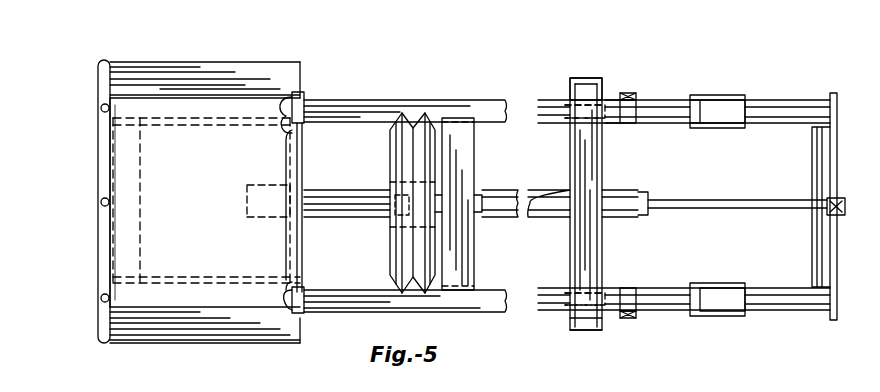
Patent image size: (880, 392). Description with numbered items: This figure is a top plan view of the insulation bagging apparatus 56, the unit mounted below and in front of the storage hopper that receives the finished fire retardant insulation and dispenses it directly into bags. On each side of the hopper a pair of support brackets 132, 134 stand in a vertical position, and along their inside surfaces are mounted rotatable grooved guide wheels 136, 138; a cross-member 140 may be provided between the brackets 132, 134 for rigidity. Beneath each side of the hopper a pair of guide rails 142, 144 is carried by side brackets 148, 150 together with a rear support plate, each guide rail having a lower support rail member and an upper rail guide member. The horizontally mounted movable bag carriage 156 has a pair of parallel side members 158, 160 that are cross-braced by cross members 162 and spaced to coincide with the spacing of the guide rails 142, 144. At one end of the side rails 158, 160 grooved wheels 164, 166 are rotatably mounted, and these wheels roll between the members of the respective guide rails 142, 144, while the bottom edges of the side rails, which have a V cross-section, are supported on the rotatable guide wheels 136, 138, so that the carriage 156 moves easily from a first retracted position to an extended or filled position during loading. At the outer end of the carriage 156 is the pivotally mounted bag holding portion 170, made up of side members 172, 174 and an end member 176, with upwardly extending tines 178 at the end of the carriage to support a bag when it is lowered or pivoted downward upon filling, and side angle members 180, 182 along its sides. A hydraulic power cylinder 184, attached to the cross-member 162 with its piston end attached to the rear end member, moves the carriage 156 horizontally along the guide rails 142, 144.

The insulation bagging apparatus 56 is at (259, 359).
The support bracket 132 is at (578, 330).
The support bracket 134 is at (585, 82).
The guide wheel 136 is at (606, 312).
The guide wheel 138 is at (598, 110).
The cross-member 140 is at (590, 157).
The guide rail 142 is at (795, 312).
The guide rail 144 is at (808, 108).
The side bracket 148 is at (630, 320).
The side bracket 150 is at (635, 99).
The movable bag carriage 156 is at (378, 100).
The side member 158 is at (493, 315).
The side member 160 is at (457, 100).
The cross member 162 is at (304, 125).
The grooved wheel 164 is at (735, 316).
The grooved wheel 166 is at (735, 96).
The bag holding portion 170 is at (172, 62).
The side member 172 is at (209, 110).
The side member 174 is at (192, 293).
The end member 176 is at (135, 252).
The tines 178 is at (98, 107).
The side angle member 180 is at (280, 330).
The side angle member 182 is at (268, 72).
The hydraulic power cylinder 184 is at (552, 200).